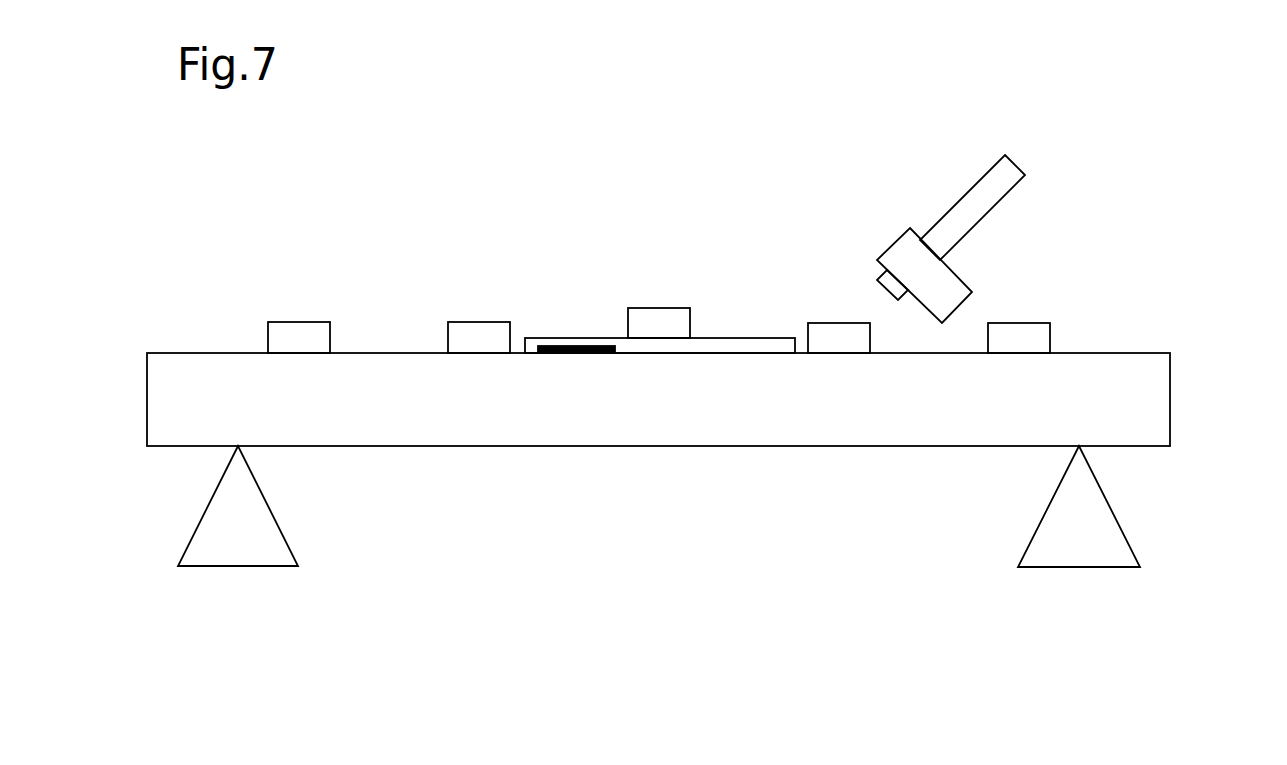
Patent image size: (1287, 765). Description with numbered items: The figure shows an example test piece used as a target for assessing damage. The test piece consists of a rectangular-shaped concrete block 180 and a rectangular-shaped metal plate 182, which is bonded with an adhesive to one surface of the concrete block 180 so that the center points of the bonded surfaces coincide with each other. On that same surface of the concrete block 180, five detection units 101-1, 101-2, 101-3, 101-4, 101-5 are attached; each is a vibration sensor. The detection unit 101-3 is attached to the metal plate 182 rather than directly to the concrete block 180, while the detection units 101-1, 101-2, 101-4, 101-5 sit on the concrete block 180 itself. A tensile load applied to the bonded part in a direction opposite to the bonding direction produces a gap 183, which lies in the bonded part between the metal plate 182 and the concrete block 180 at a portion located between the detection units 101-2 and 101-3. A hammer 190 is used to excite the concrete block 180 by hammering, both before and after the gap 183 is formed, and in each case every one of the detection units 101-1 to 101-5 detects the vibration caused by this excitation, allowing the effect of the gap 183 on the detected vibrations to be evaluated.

The concrete block 180 is at (1172, 402).
The detection unit 101-1 is at (298, 322).
The detection unit 101-2 is at (479, 322).
The detection unit 101-3 is at (660, 308).
The detection unit 101-4 is at (840, 323).
The detection unit 101-5 is at (1050, 298).
The metal plate 182 is at (748, 338).
The gap 183 is at (583, 338).
The hammer 190 is at (1027, 173).